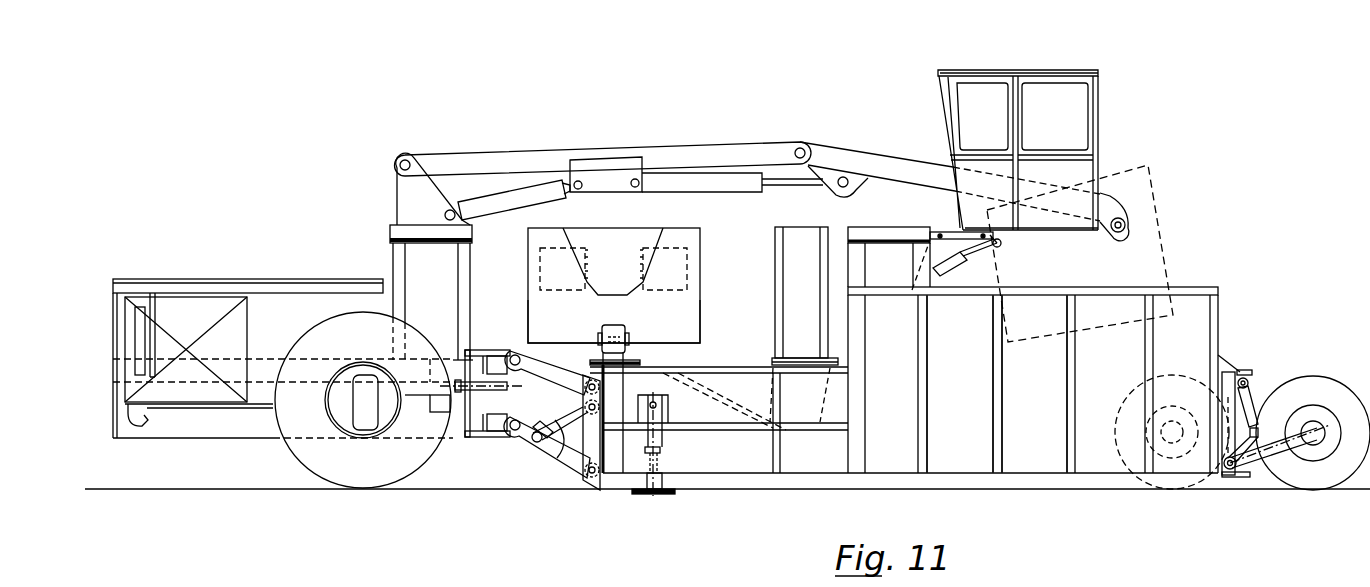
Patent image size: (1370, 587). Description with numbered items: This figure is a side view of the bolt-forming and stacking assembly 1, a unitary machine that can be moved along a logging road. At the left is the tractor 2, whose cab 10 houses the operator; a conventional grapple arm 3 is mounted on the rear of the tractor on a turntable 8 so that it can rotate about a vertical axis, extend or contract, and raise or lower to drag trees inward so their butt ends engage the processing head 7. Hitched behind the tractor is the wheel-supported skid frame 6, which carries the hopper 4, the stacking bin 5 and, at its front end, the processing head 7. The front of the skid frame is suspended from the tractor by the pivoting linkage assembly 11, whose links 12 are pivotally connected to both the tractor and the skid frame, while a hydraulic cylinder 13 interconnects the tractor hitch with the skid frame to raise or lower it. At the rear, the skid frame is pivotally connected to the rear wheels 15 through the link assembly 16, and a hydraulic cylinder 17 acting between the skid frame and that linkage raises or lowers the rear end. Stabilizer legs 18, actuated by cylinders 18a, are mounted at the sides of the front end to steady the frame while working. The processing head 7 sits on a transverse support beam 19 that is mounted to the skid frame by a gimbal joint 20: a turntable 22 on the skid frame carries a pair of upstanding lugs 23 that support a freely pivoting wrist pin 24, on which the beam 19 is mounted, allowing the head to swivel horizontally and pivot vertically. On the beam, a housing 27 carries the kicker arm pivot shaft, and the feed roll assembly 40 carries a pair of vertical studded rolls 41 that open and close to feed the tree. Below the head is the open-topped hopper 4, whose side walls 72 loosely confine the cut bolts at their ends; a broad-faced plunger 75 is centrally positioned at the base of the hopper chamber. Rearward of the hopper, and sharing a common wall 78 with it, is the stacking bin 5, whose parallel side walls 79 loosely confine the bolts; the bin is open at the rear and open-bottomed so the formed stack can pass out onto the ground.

The bolt-forming and stacking assembly 1 is at (713, 96).
The tractor 2 is at (240, 278).
The grapple arm 3 is at (777, 150).
The hopper 4 is at (811, 465).
The stacking bin 5 is at (1033, 460).
The skid frame 6 is at (966, 478).
The processing head 7 is at (706, 290).
The turntable 8 is at (473, 236).
The cab 10 is at (1086, 70).
The pivoting linkage assembly 11 is at (537, 450).
The links 12 is at (559, 388).
The hydraulic cylinder 13 is at (552, 432).
The rear wheels 15 is at (1330, 385).
The link assembly 16 is at (1262, 478).
The hydraulic cylinder 17 is at (1258, 400).
The stabilizer legs 18 is at (662, 492).
The cylinders 18a is at (662, 448).
The transverse support beam 19 is at (610, 328).
The gimbal joint 20 is at (647, 360).
The turntable 22 is at (593, 362).
The lugs 23 is at (630, 348).
The wrist pin 24 is at (597, 340).
The housing 27 is at (704, 330).
The feed roll assembly 40 is at (704, 252).
The studded rolls 41 is at (648, 250).
The side walls 72 is at (765, 399).
The plunger 75 is at (779, 452).
The common wall 78 is at (855, 328).
The side walls 79 is at (1052, 391).